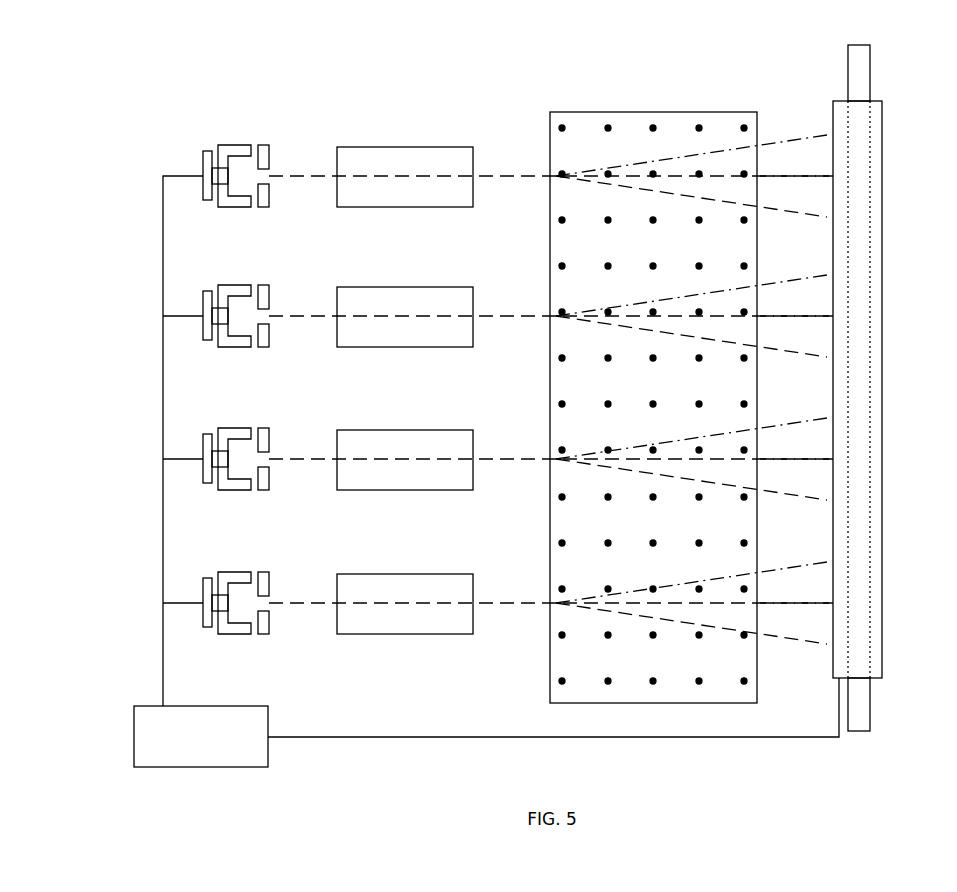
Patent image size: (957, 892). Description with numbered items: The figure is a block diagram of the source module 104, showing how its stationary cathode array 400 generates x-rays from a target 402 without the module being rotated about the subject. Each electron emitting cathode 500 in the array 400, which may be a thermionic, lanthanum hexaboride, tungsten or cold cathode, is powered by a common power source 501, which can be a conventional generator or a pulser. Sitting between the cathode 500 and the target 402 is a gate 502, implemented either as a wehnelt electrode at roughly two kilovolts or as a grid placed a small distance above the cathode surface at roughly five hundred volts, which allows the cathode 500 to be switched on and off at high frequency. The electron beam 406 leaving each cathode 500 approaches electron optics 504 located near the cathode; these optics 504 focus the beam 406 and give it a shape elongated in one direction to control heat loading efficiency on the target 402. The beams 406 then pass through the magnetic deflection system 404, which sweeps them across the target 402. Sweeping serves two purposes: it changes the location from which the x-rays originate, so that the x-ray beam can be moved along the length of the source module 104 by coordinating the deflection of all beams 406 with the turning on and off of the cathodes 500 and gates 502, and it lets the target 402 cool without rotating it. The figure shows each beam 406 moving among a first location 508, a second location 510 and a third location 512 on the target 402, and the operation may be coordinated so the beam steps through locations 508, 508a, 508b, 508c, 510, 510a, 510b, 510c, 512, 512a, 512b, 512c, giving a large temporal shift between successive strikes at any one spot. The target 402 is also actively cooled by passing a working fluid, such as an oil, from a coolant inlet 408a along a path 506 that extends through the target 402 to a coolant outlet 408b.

The source module 104 is at (112, 682).
The cathode array 400 is at (153, 149).
The target 402 is at (882, 598).
The magnetic deflection system 404 is at (677, 112).
The electron beam 406 is at (537, 184).
The coolant inlet 408a is at (870, 80).
The coolant outlet 408b is at (870, 722).
The electron emitting cathode 500 is at (207, 150).
The power source 501 is at (216, 706).
The gate 502 is at (259, 140).
The electron optics 504 is at (407, 146).
The path 506 is at (870, 644).
The first location 508 is at (826, 652).
The location 508a is at (826, 508).
The location 508b is at (826, 365).
The location 508c is at (826, 225).
The second location 510 is at (822, 598).
The location 510a is at (822, 454).
The location 510b is at (822, 311).
The location 510c is at (822, 171).
The third location 512 is at (822, 556).
The location 512a is at (822, 412).
The location 512b is at (822, 269).
The location 512c is at (822, 129).